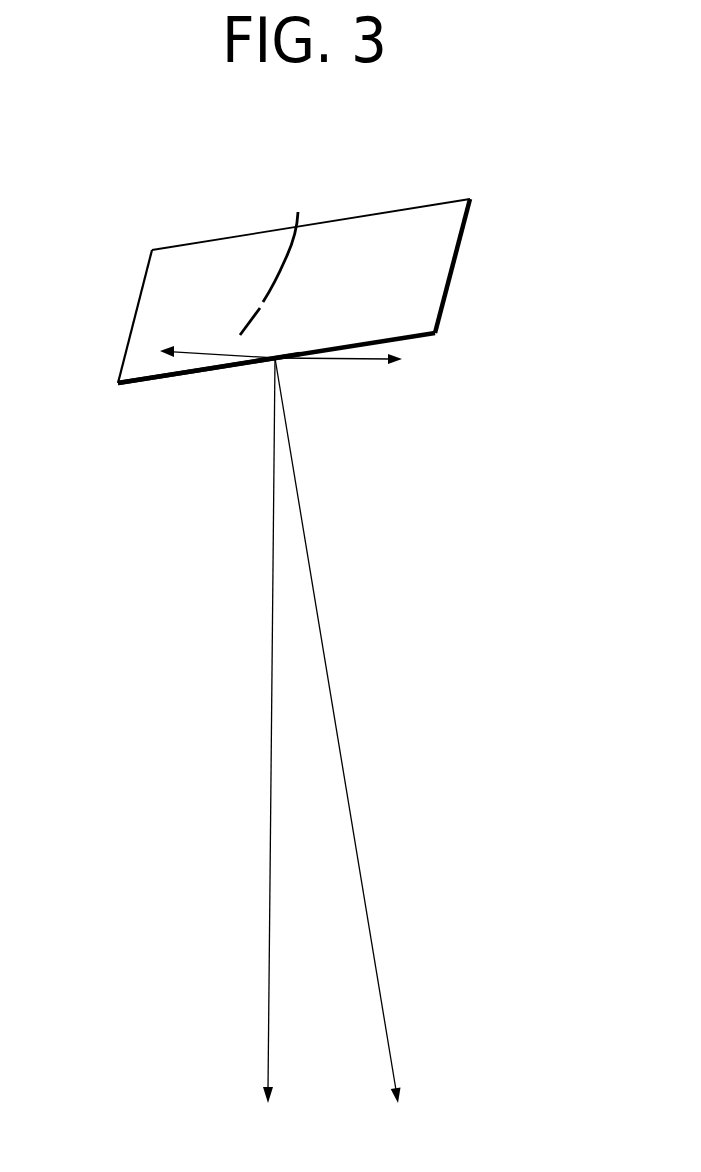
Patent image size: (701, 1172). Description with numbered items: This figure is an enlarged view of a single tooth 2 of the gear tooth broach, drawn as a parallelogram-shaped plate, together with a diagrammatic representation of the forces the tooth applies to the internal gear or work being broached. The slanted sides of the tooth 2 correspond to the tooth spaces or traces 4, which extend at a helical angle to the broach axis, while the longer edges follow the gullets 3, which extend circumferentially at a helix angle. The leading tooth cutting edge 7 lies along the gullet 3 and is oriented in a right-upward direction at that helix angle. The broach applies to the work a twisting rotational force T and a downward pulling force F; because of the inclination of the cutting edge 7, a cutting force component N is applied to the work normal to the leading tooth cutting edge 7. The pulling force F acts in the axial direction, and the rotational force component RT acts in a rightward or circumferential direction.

The tooth 2 is at (227, 367).
The gullet 3 is at (188, 230).
The tooth space 4 is at (113, 325).
The leading tooth cutting edge 7 is at (182, 375).
The twisting rotational force T is at (276, 250).
The rotational force component RT is at (342, 360).
The pulling force F is at (268, 958).
The cutting force component N is at (362, 875).